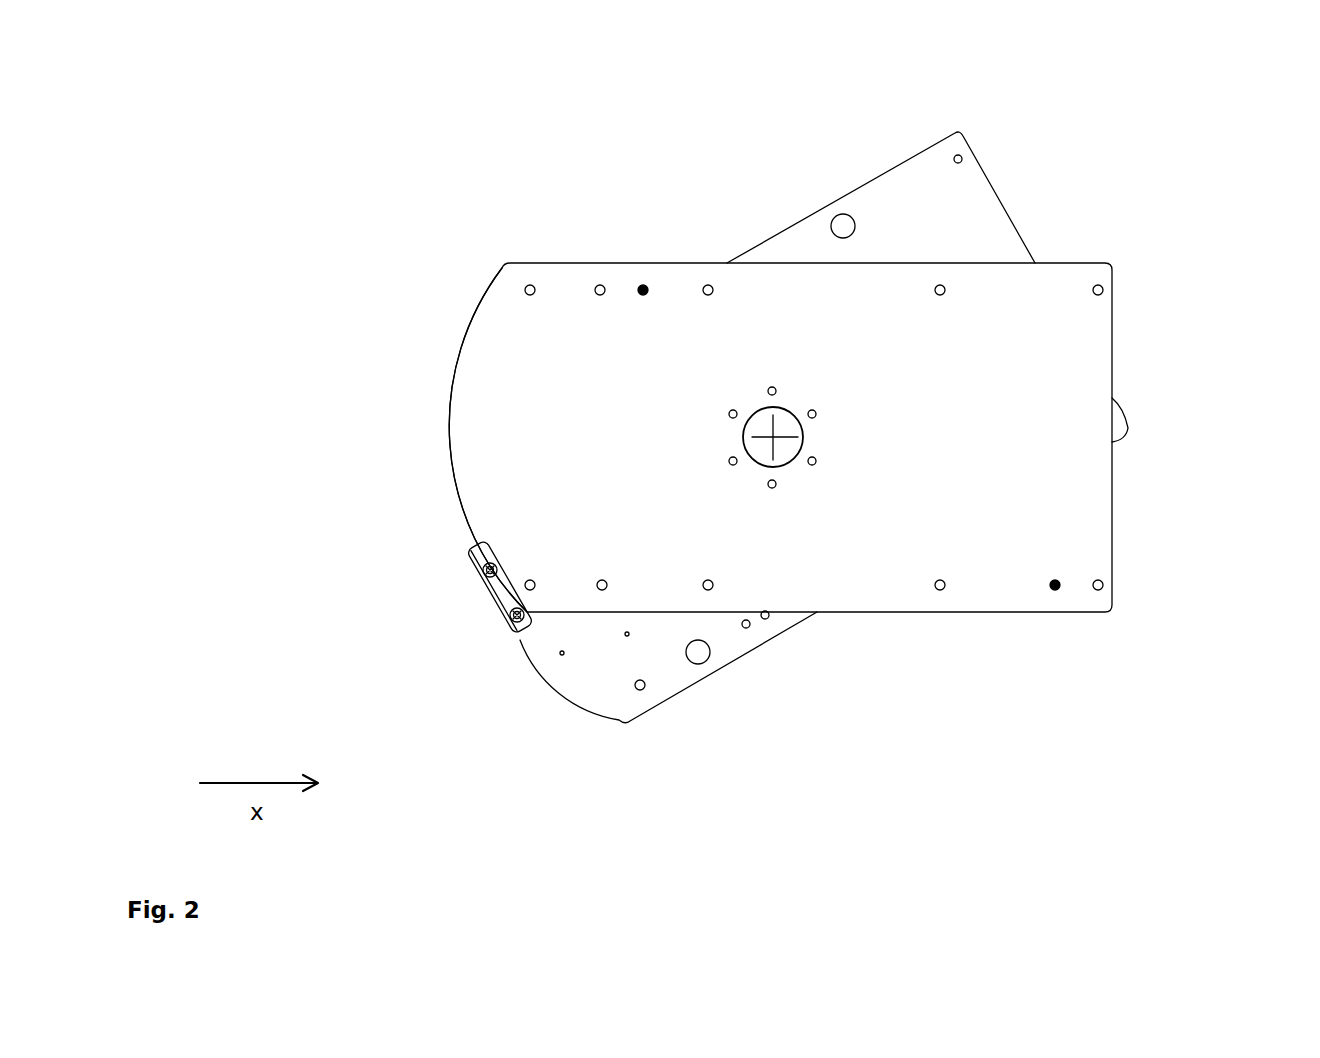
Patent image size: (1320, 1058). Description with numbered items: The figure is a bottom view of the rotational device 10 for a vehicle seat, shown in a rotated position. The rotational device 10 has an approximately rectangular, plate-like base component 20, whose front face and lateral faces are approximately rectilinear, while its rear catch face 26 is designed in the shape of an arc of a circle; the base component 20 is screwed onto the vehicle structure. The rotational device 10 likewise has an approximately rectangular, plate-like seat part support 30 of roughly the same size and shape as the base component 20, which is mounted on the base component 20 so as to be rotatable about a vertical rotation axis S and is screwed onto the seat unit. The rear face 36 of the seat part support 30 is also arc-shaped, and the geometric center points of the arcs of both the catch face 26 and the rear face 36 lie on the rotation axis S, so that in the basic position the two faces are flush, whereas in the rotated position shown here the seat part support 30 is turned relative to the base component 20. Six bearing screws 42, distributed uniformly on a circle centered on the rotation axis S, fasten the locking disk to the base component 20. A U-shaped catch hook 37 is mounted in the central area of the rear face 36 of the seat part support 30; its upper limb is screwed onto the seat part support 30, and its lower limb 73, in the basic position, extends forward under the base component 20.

The rotational device 10 is at (211, 92).
The base component 20 is at (1040, 538).
The catch face 26 is at (457, 385).
The seat part support 30 is at (972, 223).
The rear face 36 is at (562, 678).
The catch hook 37 is at (492, 592).
The lower limb 73 is at (480, 552).
The bearing screws 42 is at (815, 411).
The rotation axis S is at (773, 437).